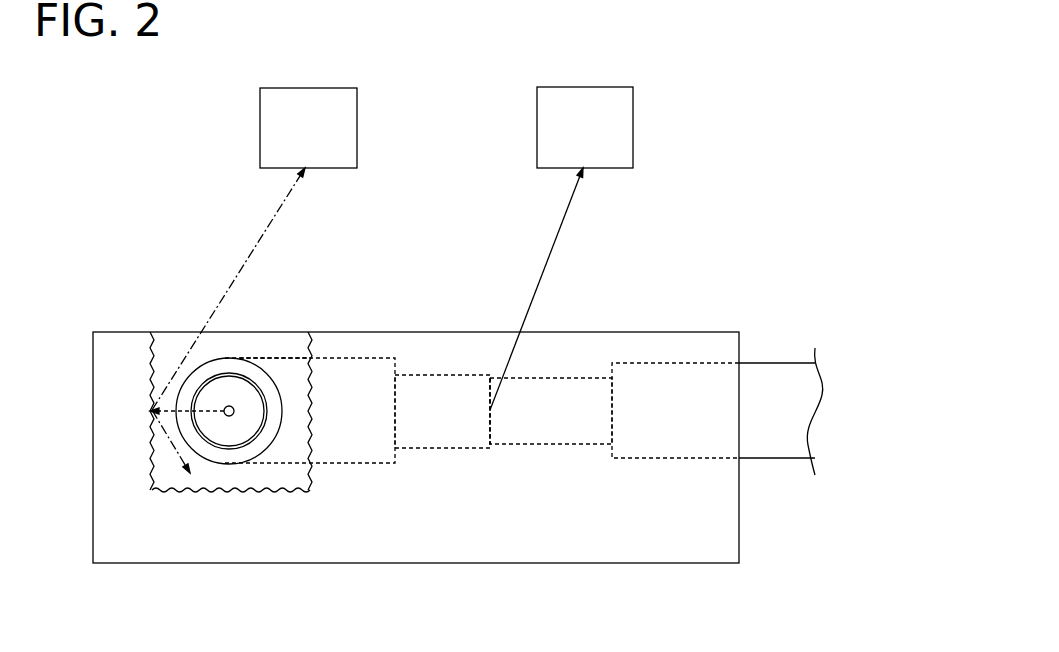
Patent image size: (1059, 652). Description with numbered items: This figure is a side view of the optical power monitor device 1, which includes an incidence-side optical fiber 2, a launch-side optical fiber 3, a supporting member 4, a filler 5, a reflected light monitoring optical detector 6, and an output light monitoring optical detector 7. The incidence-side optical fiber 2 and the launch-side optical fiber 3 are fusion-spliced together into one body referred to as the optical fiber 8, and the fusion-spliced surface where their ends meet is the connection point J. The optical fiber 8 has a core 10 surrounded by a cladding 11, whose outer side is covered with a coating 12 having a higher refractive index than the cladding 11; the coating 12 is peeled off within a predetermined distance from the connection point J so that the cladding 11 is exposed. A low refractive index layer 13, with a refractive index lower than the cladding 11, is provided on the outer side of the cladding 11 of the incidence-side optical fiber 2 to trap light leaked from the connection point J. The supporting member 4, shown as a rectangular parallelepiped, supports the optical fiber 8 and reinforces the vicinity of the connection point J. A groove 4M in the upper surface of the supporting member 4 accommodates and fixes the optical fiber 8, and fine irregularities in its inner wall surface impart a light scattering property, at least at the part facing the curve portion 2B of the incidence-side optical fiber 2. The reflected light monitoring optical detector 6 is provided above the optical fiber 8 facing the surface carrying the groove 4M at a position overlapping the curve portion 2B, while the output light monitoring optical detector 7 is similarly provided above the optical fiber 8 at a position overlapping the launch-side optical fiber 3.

The optical power monitor device 1 is at (443, 158).
The incidence-side optical fiber 2 is at (357, 360).
The curve portion 2B is at (283, 358).
The launch-side optical fiber 3 is at (677, 368).
The supporting member 4 is at (418, 334).
The groove 4M is at (152, 358).
The filler 5 is at (170, 482).
The reflected light monitoring optical detector 6 is at (266, 126).
The output light monitoring optical detector 7 is at (627, 128).
The optical fiber 8 is at (552, 445).
The core 10 is at (229, 417).
The cladding 11 is at (210, 432).
The coating 12 is at (262, 445).
The low refractive index layer 13 is at (247, 442).
The connection point J is at (488, 368).